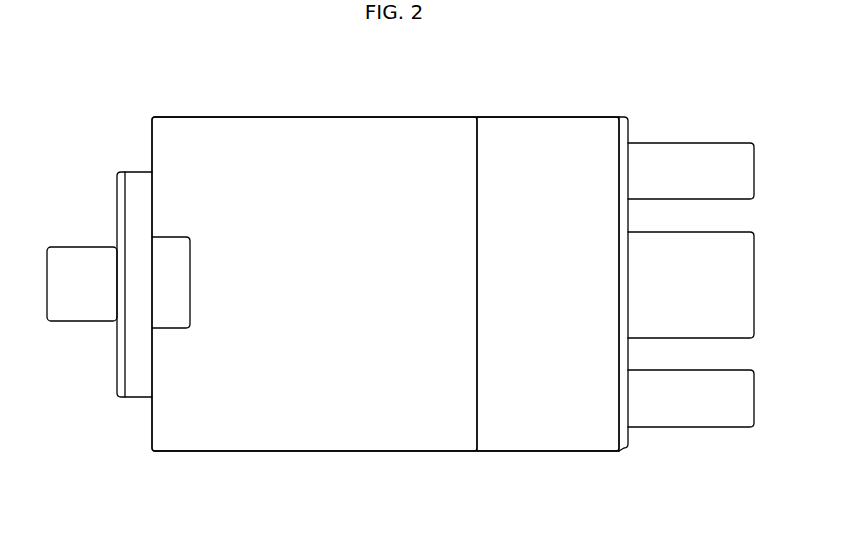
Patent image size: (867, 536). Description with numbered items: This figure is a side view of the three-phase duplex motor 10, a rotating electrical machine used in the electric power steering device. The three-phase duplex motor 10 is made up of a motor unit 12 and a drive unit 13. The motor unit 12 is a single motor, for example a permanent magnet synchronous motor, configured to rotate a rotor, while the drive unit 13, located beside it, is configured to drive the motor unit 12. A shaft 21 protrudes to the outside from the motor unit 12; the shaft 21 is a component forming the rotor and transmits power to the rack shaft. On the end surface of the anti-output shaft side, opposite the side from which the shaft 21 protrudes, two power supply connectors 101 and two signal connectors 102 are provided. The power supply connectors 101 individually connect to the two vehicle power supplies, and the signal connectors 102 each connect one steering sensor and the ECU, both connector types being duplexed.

The three-phase duplex motor 10 is at (458, 99).
The motor unit 12 is at (283, 117).
The drive unit 13 is at (583, 117).
The shaft 21 is at (66, 247).
The power supply connector 101 is at (748, 232).
The signal connector 102 is at (745, 143).